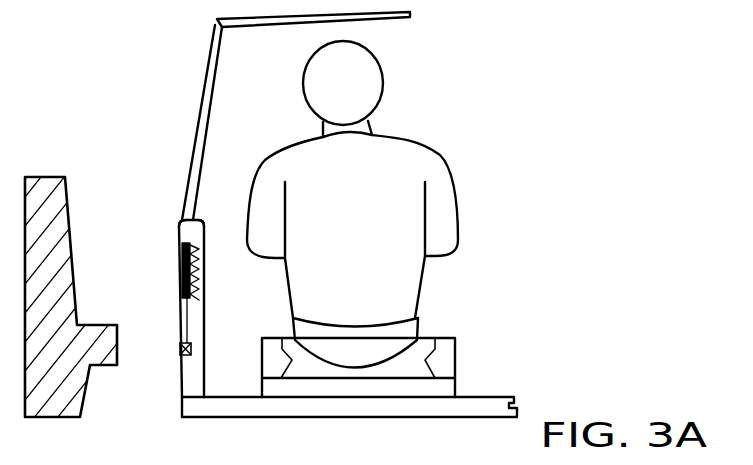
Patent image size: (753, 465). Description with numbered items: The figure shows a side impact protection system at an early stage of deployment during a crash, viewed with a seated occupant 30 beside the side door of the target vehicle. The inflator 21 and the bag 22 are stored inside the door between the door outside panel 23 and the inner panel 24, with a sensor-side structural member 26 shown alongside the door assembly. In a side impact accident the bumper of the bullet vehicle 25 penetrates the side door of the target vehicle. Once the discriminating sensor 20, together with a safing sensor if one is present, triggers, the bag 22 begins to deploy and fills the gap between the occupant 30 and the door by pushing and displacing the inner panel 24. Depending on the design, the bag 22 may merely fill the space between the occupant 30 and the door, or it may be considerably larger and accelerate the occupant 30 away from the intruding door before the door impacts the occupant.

The discriminating sensor 20 is at (176, 360).
The inflator 21 is at (179, 265).
The bag 22 is at (203, 218).
The door outside panel 23 is at (181, 218).
The inner panel 24 is at (199, 287).
The bullet vehicle 25 is at (118, 348).
The arm 26 is at (202, 110).
The occupant 30 is at (412, 142).